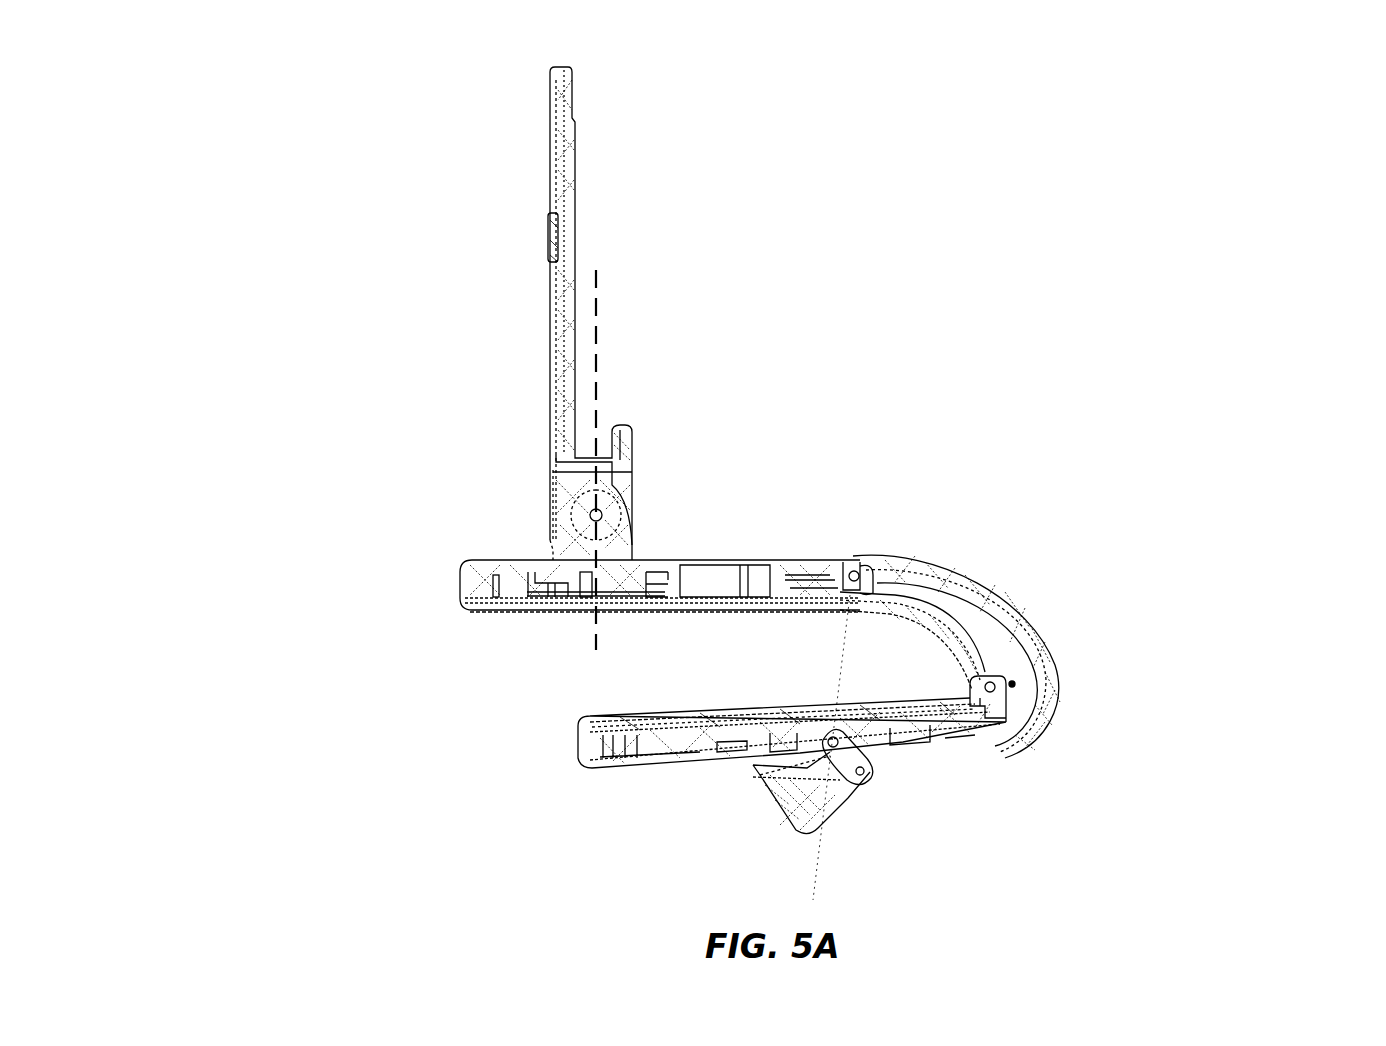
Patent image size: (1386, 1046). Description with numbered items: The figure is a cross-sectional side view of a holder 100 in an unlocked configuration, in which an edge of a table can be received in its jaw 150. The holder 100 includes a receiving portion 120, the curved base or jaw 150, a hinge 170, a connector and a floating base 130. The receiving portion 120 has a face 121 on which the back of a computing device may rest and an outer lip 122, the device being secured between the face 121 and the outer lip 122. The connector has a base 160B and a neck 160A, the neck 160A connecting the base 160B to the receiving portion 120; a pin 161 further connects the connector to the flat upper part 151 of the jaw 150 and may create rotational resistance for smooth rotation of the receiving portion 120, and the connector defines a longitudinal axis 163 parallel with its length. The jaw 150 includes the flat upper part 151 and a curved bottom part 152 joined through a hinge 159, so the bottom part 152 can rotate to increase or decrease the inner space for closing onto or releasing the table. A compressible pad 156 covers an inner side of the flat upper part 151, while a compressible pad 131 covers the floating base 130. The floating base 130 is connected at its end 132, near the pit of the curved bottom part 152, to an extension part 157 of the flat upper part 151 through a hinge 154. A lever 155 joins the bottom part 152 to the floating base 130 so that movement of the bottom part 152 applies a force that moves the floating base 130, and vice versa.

The holder 100 is at (1136, 204).
The receiving portion 120 is at (305, 45).
The face 121 is at (580, 218).
The outer lip 122 is at (622, 442).
The floating base 130 is at (596, 754).
The compressible pad 131 is at (598, 722).
The end 132 is at (1000, 706).
The jaw 150 is at (1195, 521).
The flat upper part 151 is at (736, 558).
The bottom part 152 is at (950, 575).
The hinge 154 is at (1015, 684).
The lever 155 is at (862, 776).
The compressible pad 156 is at (482, 603).
The extension part 157 is at (968, 640).
The hinge 159 is at (846, 578).
The neck 160A is at (612, 542).
The base 160B is at (545, 560).
The pin 161 is at (625, 483).
The longitudinal axis 163 is at (596, 325).
The hinge 170 is at (590, 514).